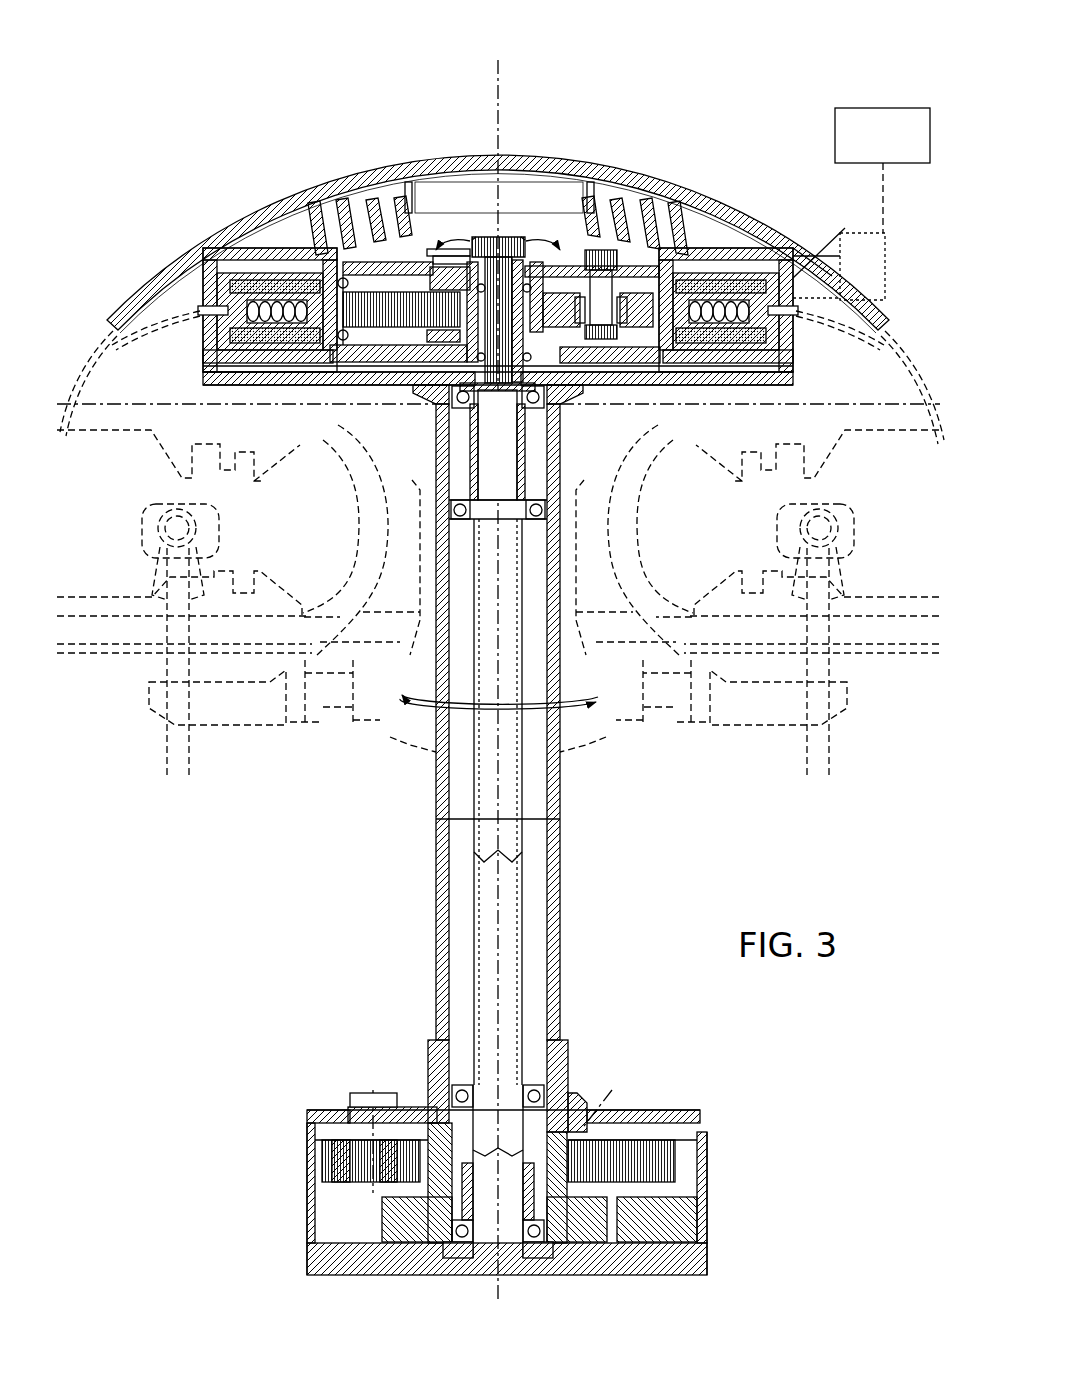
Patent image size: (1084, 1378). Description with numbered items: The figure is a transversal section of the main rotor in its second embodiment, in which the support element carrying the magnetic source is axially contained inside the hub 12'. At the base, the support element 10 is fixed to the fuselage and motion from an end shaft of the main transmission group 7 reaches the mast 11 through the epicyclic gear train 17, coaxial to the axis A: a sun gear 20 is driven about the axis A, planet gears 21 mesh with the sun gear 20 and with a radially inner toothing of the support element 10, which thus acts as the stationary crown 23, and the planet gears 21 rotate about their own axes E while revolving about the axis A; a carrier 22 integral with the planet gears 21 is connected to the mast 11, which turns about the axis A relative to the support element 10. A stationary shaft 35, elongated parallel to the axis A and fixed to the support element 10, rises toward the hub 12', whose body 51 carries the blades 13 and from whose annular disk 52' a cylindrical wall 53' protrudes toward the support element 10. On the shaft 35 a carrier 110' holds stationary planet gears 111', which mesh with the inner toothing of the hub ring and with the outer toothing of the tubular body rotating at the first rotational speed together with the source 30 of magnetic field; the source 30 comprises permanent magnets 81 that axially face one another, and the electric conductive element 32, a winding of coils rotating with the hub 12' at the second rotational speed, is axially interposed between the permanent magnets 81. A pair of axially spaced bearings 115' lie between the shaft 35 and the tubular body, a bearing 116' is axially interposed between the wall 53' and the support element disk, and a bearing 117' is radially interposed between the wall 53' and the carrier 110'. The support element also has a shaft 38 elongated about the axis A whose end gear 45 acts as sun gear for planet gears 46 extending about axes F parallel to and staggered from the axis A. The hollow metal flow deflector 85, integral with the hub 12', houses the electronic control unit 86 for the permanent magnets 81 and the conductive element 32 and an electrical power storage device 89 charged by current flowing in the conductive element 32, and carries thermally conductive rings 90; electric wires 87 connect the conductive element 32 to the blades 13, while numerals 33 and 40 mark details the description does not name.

The axis A is at (505, 543).
The flow deflector 85 is at (165, 220).
The electric wires 87 is at (72, 390).
The axes of planet gears F is at (498, 426).
The blades 13 is at (99, 676).
The blade root 33 is at (383, 440).
The body 51 is at (792, 393).
The source of magnetic field 30 is at (238, 245).
The permanent magnets 81 is at (248, 280).
The thermally conductive rings 90 is at (302, 283).
The electric conductive element 32 is at (282, 325).
The spring 40 is at (270, 322).
The planet gears 46 is at (362, 297).
The carrier 110' is at (611, 203).
The bearing 117' is at (650, 254).
The cylindrical wall 53' is at (617, 260).
The shaft 38 is at (502, 221).
The end gear 45 is at (498, 388).
The planet gears 111' is at (571, 352).
The bearings 115' is at (519, 315).
The bearing 116' is at (650, 345).
The electronic control unit 86 is at (532, 188).
The electrical power storage device 89 is at (840, 140).
The annular disk 52' is at (839, 231).
The hub 12' is at (870, 283).
The mast 11 is at (553, 878).
The shaft 35 is at (515, 905).
The axes of planet gears E is at (493, 1130).
The carrier 22 is at (352, 1108).
The epicyclic gear train 17 is at (696, 1120).
The planet gears 21 is at (350, 1170).
The stationary crown 23 is at (678, 1160).
The sun gear 20 is at (450, 1197).
The main transmission group 7 is at (710, 1195).
The support element 10 is at (576, 1266).